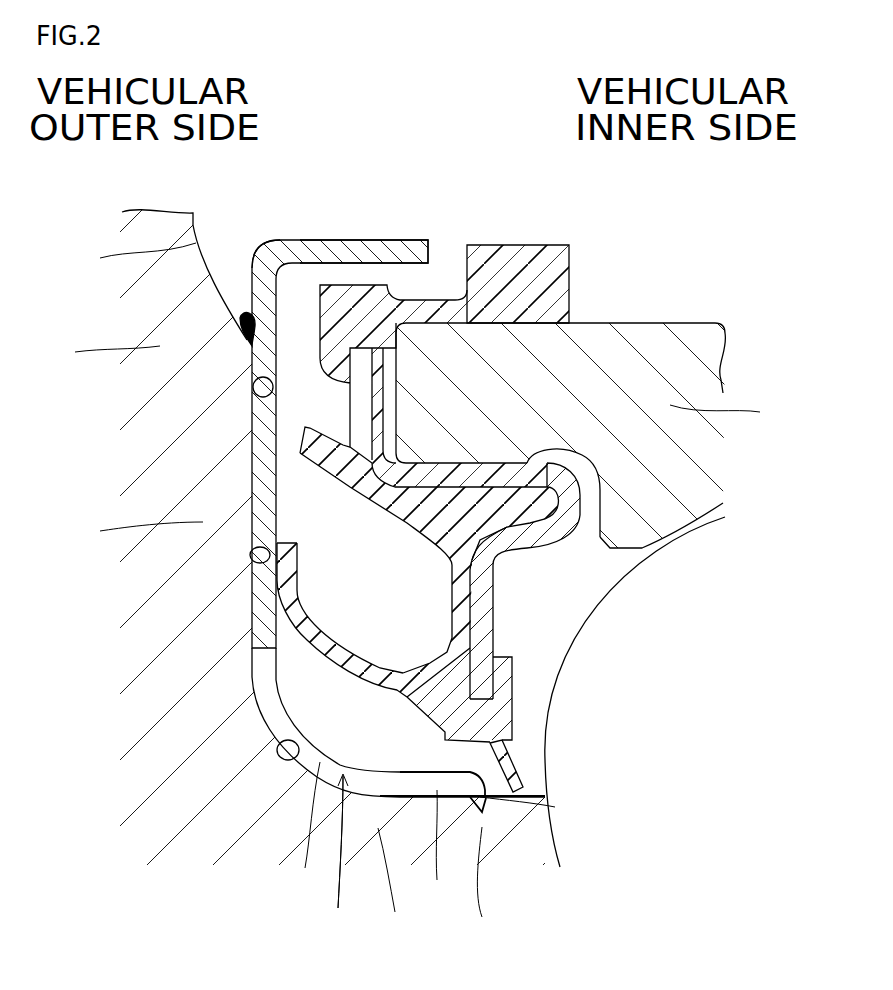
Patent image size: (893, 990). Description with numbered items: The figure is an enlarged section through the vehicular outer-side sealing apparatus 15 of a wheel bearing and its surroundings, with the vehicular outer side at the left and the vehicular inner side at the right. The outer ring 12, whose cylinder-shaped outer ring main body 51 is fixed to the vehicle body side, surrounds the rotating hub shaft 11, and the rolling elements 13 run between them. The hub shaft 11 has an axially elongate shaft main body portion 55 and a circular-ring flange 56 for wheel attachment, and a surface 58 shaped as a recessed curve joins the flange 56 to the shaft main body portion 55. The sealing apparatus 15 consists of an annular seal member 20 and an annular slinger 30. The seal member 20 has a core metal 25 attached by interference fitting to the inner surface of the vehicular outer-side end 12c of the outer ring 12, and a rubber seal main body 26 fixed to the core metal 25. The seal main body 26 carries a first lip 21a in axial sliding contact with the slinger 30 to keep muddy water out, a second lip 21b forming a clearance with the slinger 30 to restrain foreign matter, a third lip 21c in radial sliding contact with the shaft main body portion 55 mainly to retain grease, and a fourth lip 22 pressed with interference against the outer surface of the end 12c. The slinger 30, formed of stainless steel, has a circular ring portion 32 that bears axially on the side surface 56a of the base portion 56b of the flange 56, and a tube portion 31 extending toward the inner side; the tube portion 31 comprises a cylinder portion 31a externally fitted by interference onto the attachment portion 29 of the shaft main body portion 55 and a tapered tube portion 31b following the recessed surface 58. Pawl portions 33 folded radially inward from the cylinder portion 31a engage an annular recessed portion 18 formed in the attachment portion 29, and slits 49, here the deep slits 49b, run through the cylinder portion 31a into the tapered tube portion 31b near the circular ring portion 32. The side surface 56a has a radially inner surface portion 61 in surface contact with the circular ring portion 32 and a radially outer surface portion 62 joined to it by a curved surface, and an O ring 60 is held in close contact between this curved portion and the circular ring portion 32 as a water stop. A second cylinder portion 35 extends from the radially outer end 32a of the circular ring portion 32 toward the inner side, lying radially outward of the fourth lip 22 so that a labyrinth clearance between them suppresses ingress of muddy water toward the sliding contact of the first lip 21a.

The hub shaft 11 is at (135, 841).
The outer ring 12 is at (684, 310).
The vehicular outer-side end 12c is at (455, 347).
The rolling elements 13 is at (560, 835).
The sealing apparatus 15 is at (553, 243).
The recessed portion 18 is at (531, 805).
The seal member 20 is at (500, 603).
The first lip 21a is at (318, 637).
The second lip 21b is at (300, 450).
The third lip 21c is at (517, 778).
The fourth lip 22 is at (510, 290).
The core metal 25 is at (593, 501).
The seal main body 26 is at (433, 520).
The attachment portion 29 is at (478, 885).
The slinger 30 is at (249, 603).
The tube portion 31 is at (415, 772).
The cylinder portion 31a is at (441, 847).
The tapered tube portion 31b is at (301, 828).
The circular ring portion 32 is at (270, 327).
The radially outer end 32a is at (263, 240).
The pawl portions 33 is at (500, 763).
The second cylinder portion 35 is at (390, 250).
The engaging recess 49 is at (328, 854).
The deep slits 49b is at (348, 786).
The outer ring main body 51 is at (731, 409).
The shaft main body portion 55 is at (393, 884).
The flange 56 is at (103, 350).
The side surface 56a is at (248, 372).
The base portion 56b is at (131, 528).
The surface 58 is at (283, 760).
The O ring 60 is at (243, 318).
The radially inner surface portion 61 is at (265, 552).
The radially outer surface portion 62 is at (133, 256).